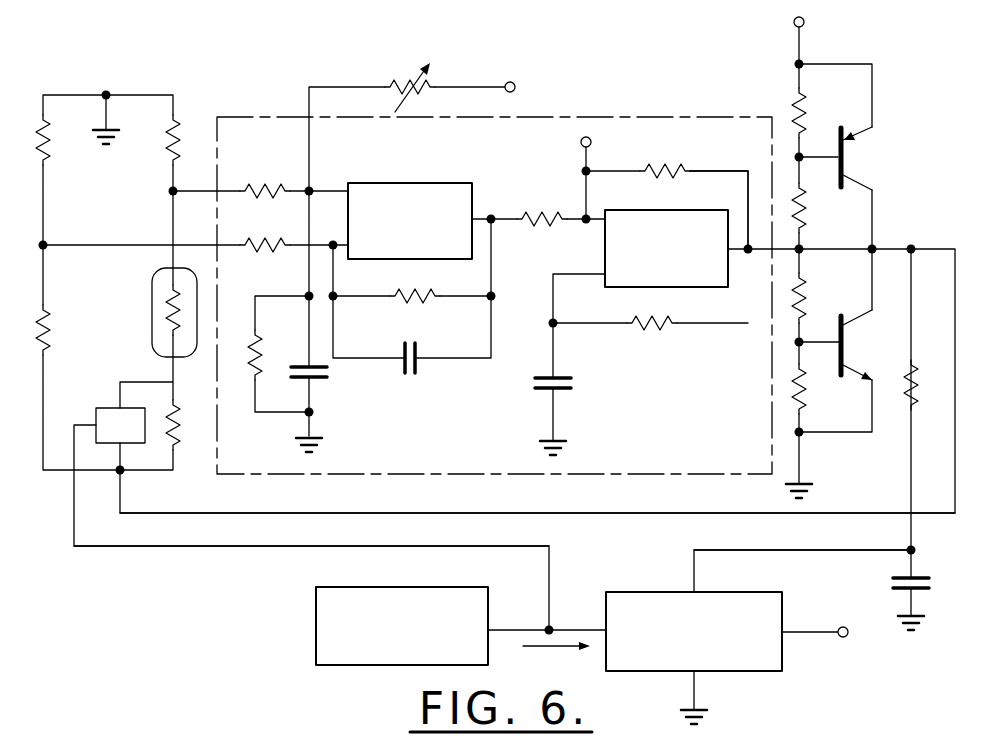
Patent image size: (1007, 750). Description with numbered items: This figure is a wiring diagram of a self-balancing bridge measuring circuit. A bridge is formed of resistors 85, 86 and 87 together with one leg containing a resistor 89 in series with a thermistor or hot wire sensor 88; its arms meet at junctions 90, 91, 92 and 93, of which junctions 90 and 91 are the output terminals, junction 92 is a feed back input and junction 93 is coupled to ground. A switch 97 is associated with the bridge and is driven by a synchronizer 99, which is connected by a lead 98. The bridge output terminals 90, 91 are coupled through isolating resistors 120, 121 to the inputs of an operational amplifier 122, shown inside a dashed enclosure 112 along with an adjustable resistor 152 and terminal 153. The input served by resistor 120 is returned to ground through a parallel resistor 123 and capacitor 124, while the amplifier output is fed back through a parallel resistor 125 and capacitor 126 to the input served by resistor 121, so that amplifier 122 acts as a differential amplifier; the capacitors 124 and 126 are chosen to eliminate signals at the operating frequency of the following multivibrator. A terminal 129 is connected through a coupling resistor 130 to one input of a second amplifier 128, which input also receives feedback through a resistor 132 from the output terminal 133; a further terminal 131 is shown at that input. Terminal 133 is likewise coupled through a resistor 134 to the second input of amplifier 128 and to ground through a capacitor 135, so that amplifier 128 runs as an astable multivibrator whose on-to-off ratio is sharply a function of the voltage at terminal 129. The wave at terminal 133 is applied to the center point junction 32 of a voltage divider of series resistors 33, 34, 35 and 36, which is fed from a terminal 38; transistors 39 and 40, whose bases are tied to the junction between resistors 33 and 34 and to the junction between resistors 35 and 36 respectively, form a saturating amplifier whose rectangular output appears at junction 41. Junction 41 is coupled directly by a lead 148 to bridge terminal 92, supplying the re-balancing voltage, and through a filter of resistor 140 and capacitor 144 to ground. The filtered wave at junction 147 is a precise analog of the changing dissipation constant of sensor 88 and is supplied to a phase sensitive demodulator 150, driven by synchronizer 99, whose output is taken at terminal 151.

The center point junction 32 is at (804, 249).
The resistor 33 is at (794, 107).
The resistor 34 is at (811, 206).
The resistor 35 is at (808, 302).
The resistor 36 is at (812, 395).
The supply terminal 38 is at (790, 24).
The transistor 39 is at (856, 162).
The transistor 40 is at (854, 344).
The output junction 41 is at (876, 244).
The resistor 85 is at (50, 155).
The resistor 86 is at (48, 304).
The resistor 87 is at (180, 118).
The thermistor 88 is at (146, 316).
The resistor 89 is at (178, 448).
The bridge output terminal 90 is at (46, 242).
The bridge output terminal 91 is at (168, 194).
The feed back input terminal 92 is at (118, 472).
The ground junction 93 is at (109, 89).
The switch 97 is at (112, 406).
The lead 98 is at (210, 548).
The synchronizer 99 is at (307, 630).
The amplifier circuit 112 is at (266, 116).
The isolating resistor 120 is at (262, 182).
The isolating resistor 121 is at (262, 245).
The operational amplifier 122 is at (400, 182).
The resistor 123 is at (258, 346).
The capacitor 124 is at (320, 380).
The resistor 125 is at (431, 302).
The capacitor 126 is at (422, 368).
The amplifier 128 is at (604, 258).
The terminal 129 is at (492, 212).
The coupling resistor 130 is at (545, 212).
The terminal 131 is at (580, 142).
The feedback resistor 132 is at (680, 170).
The output terminal 133 is at (748, 248).
The resistor 134 is at (664, 332).
The capacitor 135 is at (576, 388).
The resistor 140 is at (907, 412).
The capacitor 144 is at (890, 584).
The junction 147 is at (906, 548).
The lead 148 is at (469, 511).
The phase sensitive demodulator 150 is at (662, 590).
The terminal 151 is at (843, 638).
The potentiometer 152 is at (393, 80).
The terminal 153 is at (516, 84).